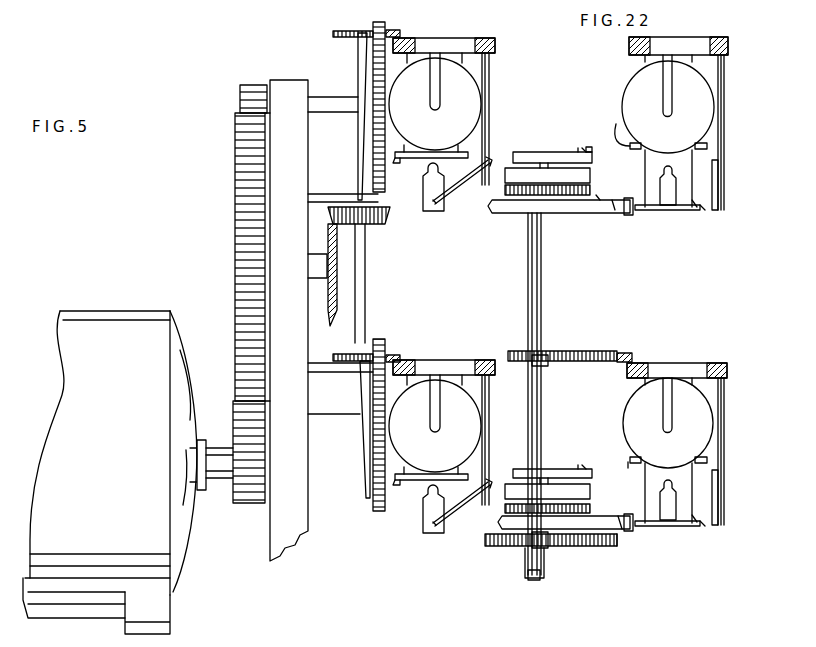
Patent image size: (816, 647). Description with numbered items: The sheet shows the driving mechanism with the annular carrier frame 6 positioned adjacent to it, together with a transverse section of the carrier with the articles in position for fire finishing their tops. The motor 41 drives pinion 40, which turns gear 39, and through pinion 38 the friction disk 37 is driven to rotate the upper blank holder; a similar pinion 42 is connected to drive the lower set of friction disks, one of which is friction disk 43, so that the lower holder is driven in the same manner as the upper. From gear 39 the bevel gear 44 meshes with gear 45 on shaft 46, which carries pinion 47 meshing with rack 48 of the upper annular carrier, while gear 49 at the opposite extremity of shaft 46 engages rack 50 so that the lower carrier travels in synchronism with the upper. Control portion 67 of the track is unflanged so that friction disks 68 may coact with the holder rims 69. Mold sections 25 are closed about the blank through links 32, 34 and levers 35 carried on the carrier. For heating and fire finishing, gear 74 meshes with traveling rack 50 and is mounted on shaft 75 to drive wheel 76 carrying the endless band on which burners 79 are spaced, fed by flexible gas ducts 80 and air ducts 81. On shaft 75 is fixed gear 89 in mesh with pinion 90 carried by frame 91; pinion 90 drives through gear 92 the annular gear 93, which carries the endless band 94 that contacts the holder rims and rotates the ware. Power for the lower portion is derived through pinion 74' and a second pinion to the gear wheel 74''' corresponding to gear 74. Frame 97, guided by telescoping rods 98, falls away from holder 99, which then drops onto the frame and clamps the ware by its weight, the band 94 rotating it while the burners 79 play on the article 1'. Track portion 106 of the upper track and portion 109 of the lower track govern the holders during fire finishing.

In FIG. 22, the article 1' is at (688, 368).
In FIG. 5, the annular carrier frame 6 is at (495, 40).
In FIG. 22, the annular carrier frame 6 is at (728, 40).
In FIG. 5, the mold sections 25 is at (440, 213).
In FIG. 22, the mold sections 25 is at (722, 212).
In FIG. 5, the link 32 is at (492, 121).
In FIG. 22, the link 32 is at (725, 86).
In FIG. 5, the link 34 is at (472, 341).
In FIG. 5, the lever 35 is at (452, 198).
In FIG. 5, the friction disk 37 is at (386, 25).
In FIG. 5, the pinion 38 is at (257, 85).
In FIG. 5, the gear 39 is at (235, 203).
In FIG. 5, the pinion 40 is at (235, 505).
In FIG. 5, the motor 41 is at (82, 311).
In FIG. 5, the pinion 42 is at (268, 437).
In FIG. 5, the friction disk 43 is at (371, 502).
In FIG. 5, the bevel gear 44 is at (340, 292).
In FIG. 5, the gear 45 is at (388, 222).
In FIG. 5, the shaft 46 is at (366, 270).
In FIG. 5, the pinion 47 is at (352, 33).
In FIG. 5, the rack 48 is at (400, 33).
In FIG. 5, the gear 49 is at (345, 355).
In FIG. 5, the rack 50 is at (398, 358).
In FIG. 22, the rack 50 is at (622, 354).
In FIG. 5, the control portion of track 67 is at (409, 329).
In FIG. 5, the friction disk 68 is at (480, 84).
In FIG. 22, the friction disk 68 is at (714, 112).
In FIG. 5, the holder rim 69 is at (470, 152).
In FIG. 22, the holder rim 69 is at (708, 146).
In FIG. 22, the gear 74 is at (562, 338).
In FIG. 22, the pinion 74' is at (557, 369).
In FIG. 22, the gear wheel 74''' is at (639, 563).
In FIG. 22, the shaft 75 is at (544, 287).
In FIG. 22, the wheel 76 is at (540, 153).
In FIG. 22, the burner 79 is at (592, 155).
In FIG. 22, the gas duct 80 is at (584, 148).
In FIG. 22, the air duct 81 is at (575, 295).
In FIG. 22, the gear 89 is at (558, 213).
In FIG. 22, the pinion 90 is at (580, 196).
In FIG. 22, the frame 91 is at (590, 172).
In FIG. 22, the gear 92 is at (600, 210).
In FIG. 22, the annular gear 93 is at (620, 213).
In FIG. 22, the endless band 94 is at (628, 213).
In FIG. 22, the frame 97 is at (698, 208).
In FIG. 5, the telescoping rod 98 is at (500, 54).
In FIG. 22, the telescoping rod 98 is at (694, 176).
In FIG. 22, the holder 99 is at (702, 208).
In FIG. 22, the track portion 106 is at (609, 122).
In FIG. 22, the track portion 109 is at (632, 477).